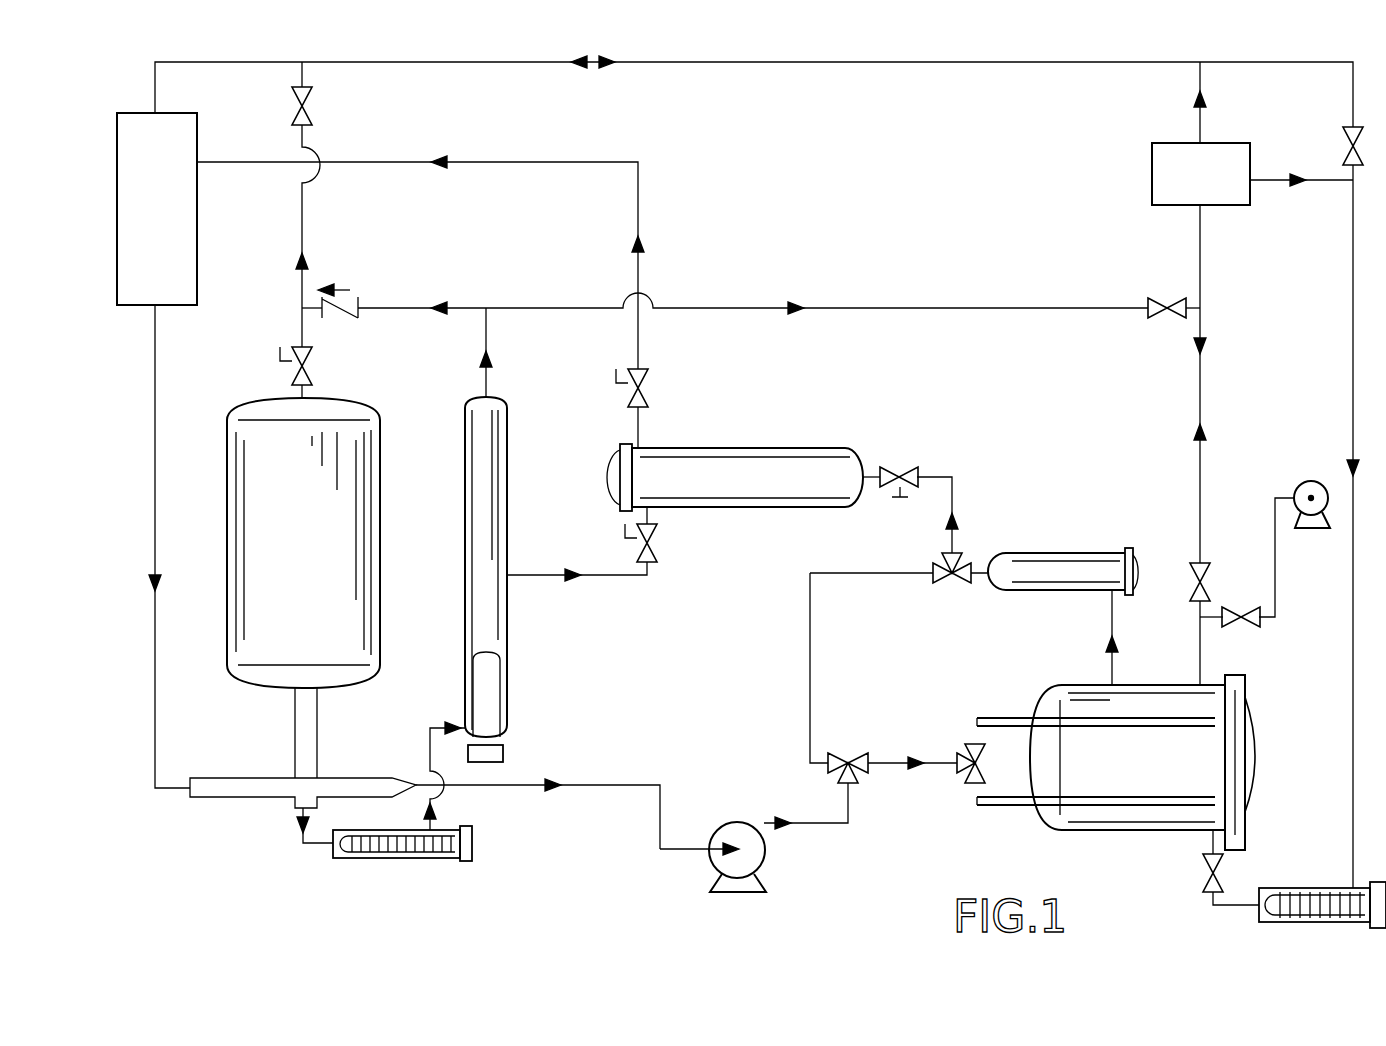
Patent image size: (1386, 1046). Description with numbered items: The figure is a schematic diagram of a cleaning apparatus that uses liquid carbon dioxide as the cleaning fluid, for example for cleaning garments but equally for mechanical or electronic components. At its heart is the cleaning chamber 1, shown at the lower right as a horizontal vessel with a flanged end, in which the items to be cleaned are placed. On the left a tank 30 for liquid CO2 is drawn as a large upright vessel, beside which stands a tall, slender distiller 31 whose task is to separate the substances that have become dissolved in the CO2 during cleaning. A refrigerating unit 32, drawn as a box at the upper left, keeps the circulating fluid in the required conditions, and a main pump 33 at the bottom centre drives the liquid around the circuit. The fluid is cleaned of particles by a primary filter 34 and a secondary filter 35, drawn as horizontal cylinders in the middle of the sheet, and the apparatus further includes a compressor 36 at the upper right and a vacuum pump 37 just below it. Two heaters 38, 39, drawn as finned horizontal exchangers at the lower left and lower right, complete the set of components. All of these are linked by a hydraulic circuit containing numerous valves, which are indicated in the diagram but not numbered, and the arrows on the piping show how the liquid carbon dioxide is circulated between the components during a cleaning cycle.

The cleaning chamber 1 is at (1105, 756).
The tank 30 is at (308, 538).
The distiller 31 is at (498, 473).
The refrigerating unit 32 is at (172, 218).
The main pump 33 is at (762, 844).
The primary filter 34 is at (753, 494).
The secondary filter 35 is at (1062, 570).
The compressor 36 is at (1218, 196).
The vacuum pump 37 is at (1311, 481).
The heater 38 is at (405, 858).
The heater 39 is at (1316, 900).